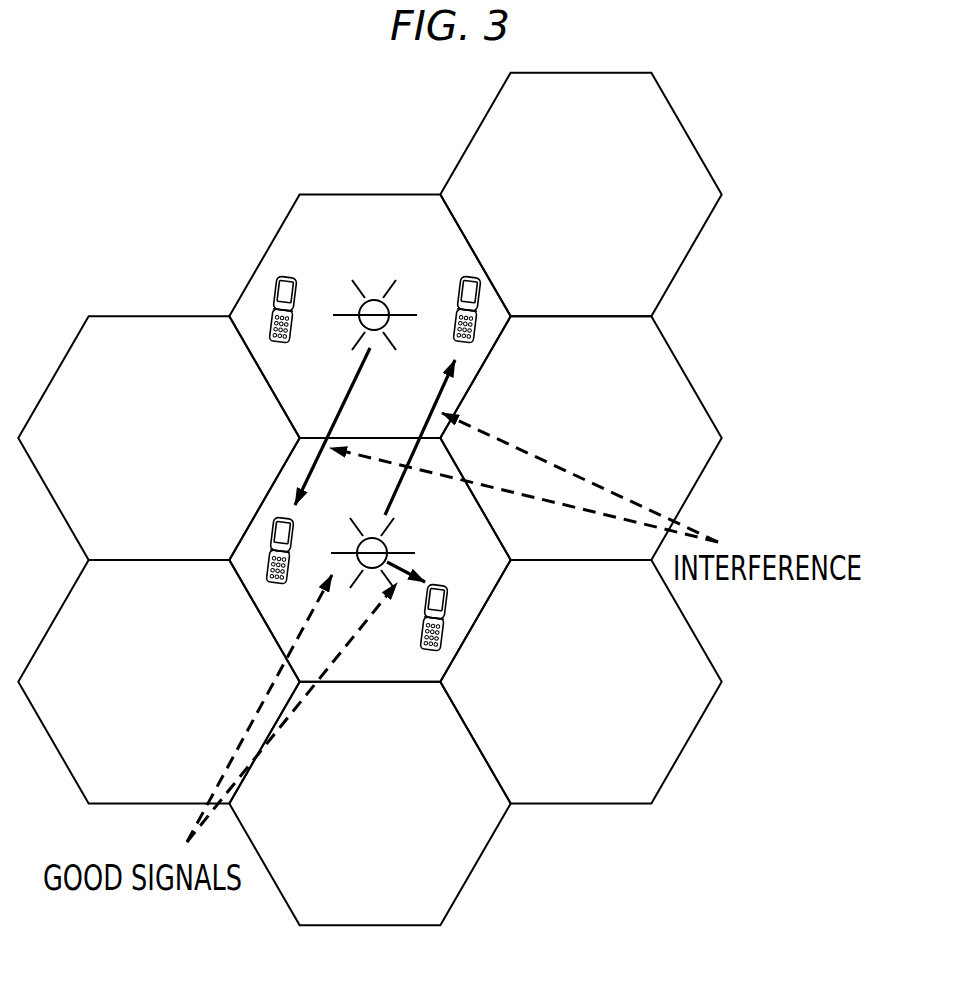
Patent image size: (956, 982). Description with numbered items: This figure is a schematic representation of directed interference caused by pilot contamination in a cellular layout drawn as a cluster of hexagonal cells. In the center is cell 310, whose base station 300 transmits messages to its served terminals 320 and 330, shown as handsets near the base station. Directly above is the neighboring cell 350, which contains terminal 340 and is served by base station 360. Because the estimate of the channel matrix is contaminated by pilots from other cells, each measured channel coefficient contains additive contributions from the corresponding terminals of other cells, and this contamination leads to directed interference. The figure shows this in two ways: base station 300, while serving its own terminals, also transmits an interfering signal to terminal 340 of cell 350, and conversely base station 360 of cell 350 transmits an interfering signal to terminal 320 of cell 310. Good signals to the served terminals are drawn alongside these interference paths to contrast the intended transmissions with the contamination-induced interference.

The base station 300 is at (389, 556).
The cell 310 is at (258, 608).
The terminal 320 is at (272, 545).
The terminal 330 is at (440, 645).
The terminal 340 is at (480, 281).
The cell 350 is at (270, 247).
The base station 360 is at (373, 299).